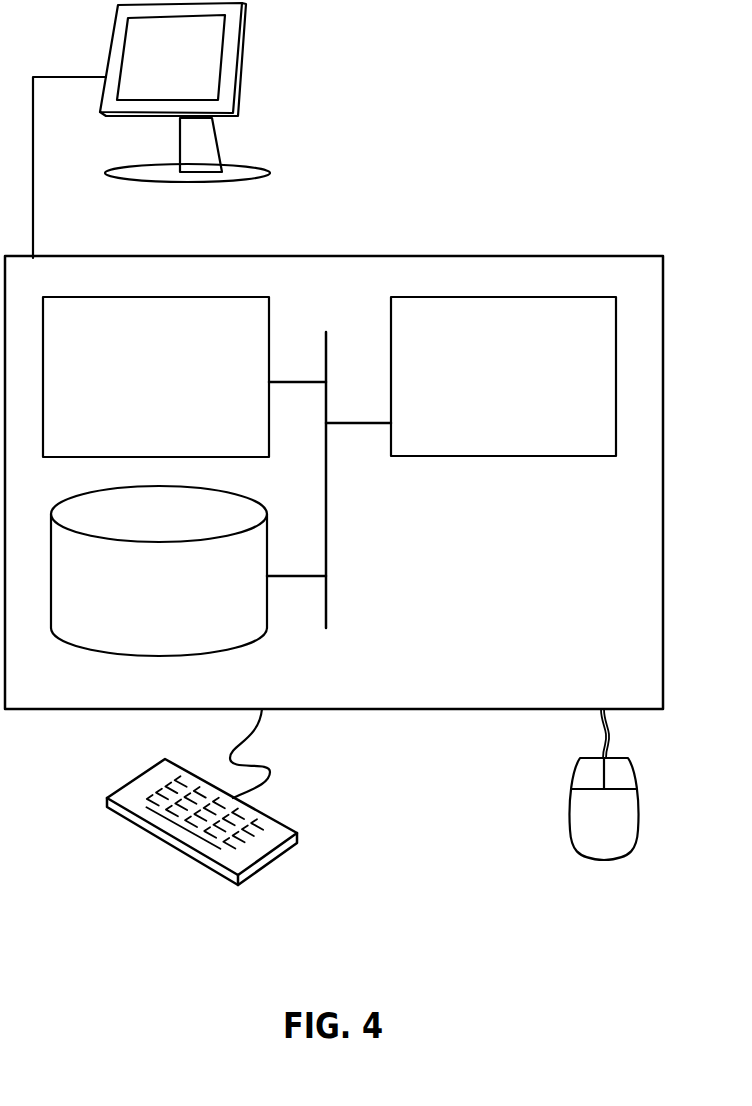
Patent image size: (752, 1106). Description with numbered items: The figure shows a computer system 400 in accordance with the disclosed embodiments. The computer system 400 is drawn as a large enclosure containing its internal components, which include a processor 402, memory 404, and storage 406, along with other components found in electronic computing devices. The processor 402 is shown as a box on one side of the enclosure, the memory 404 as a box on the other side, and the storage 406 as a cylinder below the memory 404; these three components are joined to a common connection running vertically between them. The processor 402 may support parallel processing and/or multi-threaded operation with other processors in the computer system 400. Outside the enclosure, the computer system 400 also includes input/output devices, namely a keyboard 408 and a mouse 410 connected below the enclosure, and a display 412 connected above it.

The computer system 400 is at (380, 233).
The processor 402 is at (486, 390).
The memory 404 is at (136, 390).
The storage 406 is at (142, 602).
The keyboard 408 is at (127, 818).
The mouse 410 is at (583, 832).
The display 412 is at (151, 130).